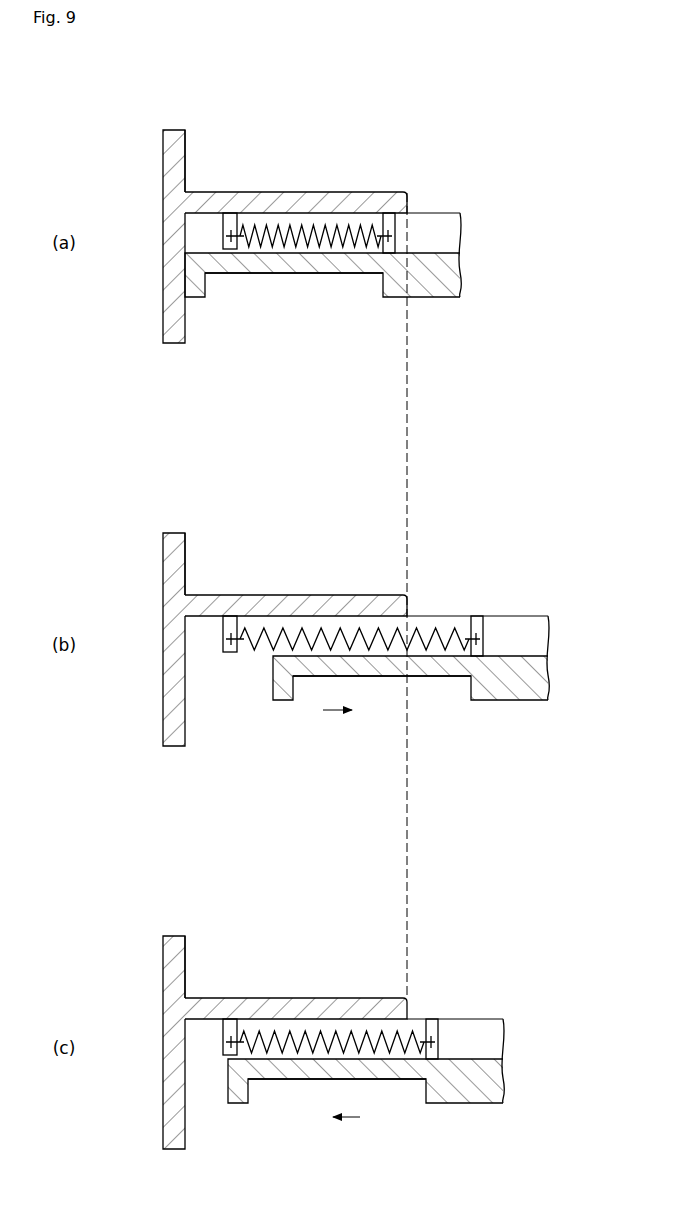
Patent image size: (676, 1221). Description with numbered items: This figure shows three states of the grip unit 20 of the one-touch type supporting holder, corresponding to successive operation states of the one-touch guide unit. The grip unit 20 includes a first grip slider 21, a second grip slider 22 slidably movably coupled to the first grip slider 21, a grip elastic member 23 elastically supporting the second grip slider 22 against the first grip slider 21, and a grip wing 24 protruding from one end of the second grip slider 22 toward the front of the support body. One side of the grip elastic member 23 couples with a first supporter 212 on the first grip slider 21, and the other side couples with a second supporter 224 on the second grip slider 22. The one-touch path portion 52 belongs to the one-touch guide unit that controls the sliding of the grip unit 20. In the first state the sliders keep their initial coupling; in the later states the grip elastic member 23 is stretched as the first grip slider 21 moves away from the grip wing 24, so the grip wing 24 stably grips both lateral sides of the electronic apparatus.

The grip unit 20 is at (168, 128).
The grip wing 24 is at (185, 140).
The second grip slider 22 is at (366, 653).
The second supporter 224 is at (231, 250).
The grip elastic member 23 is at (270, 224).
The first grip slider 21 is at (380, 632).
The first supporter 212 is at (391, 214).
The one-touch path portion 52 is at (320, 288).